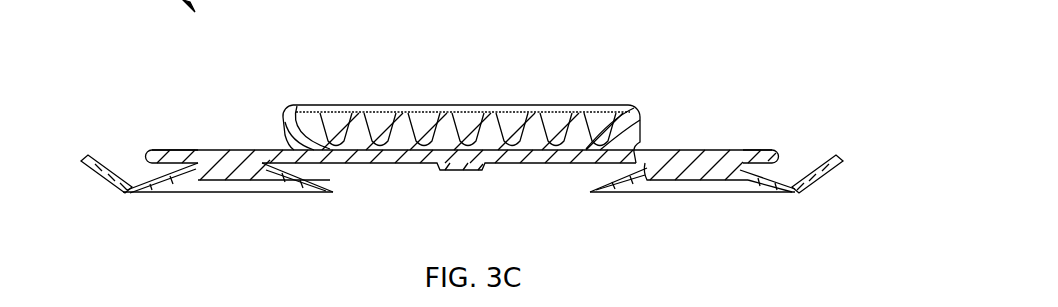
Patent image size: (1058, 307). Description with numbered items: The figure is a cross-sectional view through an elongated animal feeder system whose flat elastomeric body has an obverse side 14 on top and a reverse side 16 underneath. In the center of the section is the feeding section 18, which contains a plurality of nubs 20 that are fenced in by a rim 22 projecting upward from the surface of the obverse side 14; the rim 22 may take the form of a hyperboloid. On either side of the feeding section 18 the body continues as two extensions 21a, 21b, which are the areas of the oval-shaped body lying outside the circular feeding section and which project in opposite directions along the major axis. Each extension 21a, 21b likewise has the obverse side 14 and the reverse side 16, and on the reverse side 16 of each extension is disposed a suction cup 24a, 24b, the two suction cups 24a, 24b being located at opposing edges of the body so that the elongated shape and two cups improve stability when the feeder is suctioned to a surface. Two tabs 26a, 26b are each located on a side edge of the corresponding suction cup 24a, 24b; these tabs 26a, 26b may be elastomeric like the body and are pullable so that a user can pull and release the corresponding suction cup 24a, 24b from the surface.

The obverse side 14 is at (172, 138).
The reverse side 16 is at (389, 191).
The feeding section 18 is at (518, 87).
The nubs 20 is at (385, 108).
The extension 21a is at (222, 148).
The extension 21b is at (715, 148).
The rim 22 is at (642, 121).
The suction cup 24a is at (240, 196).
The suction cup 24b is at (690, 196).
The tab 26a is at (97, 157).
The tab 26b is at (829, 158).